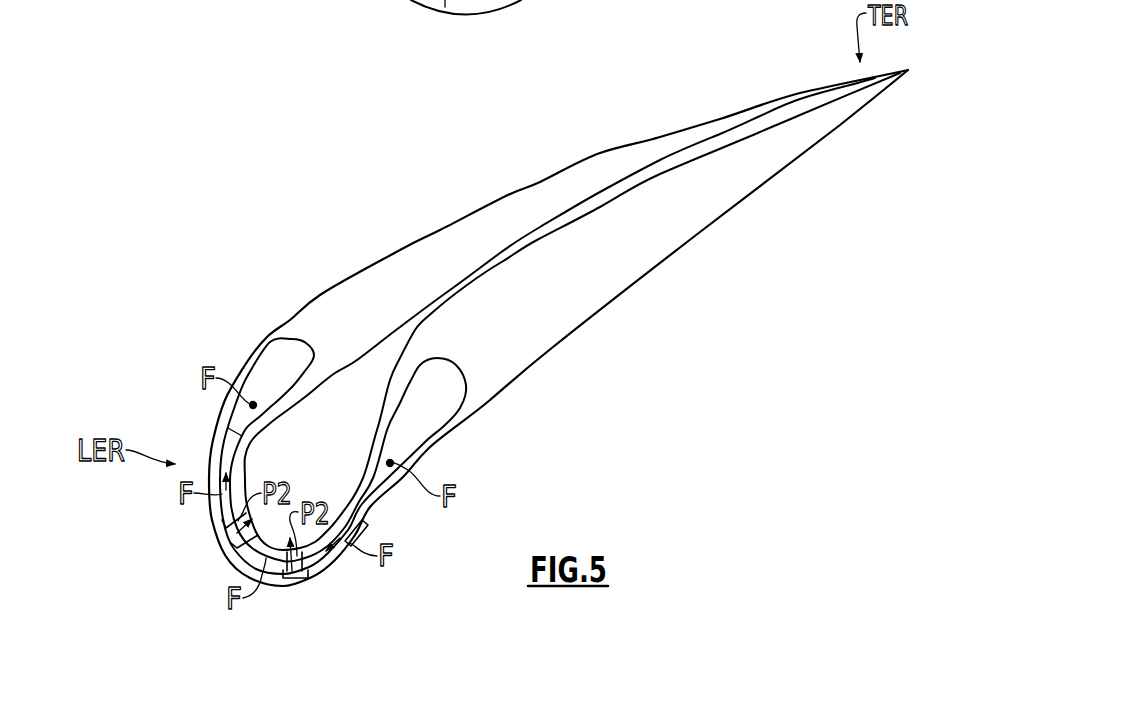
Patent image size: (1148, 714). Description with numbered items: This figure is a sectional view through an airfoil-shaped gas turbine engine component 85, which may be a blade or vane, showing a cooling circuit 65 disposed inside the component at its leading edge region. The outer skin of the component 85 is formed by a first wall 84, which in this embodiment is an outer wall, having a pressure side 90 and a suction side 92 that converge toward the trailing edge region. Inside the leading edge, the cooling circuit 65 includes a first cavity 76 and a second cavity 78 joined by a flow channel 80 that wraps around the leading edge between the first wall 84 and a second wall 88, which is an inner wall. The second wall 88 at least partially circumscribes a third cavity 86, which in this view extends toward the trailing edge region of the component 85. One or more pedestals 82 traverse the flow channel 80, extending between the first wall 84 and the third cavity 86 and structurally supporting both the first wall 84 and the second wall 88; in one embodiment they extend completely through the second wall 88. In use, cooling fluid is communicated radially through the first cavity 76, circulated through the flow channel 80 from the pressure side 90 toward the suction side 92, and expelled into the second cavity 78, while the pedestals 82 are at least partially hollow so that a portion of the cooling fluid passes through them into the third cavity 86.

The cooling circuit 65 is at (358, 318).
The first cavity 76 is at (432, 418).
The second cavity 78 is at (275, 382).
The flow channel 80 is at (340, 550).
The pedestals 82 is at (235, 542).
The first wall 84 is at (322, 576).
The gas turbine engine component 85 is at (558, 328).
The third cavity 86 is at (338, 458).
The second wall 88 is at (333, 518).
The pressure side 90 is at (553, 347).
The suction side 92 is at (508, 193).